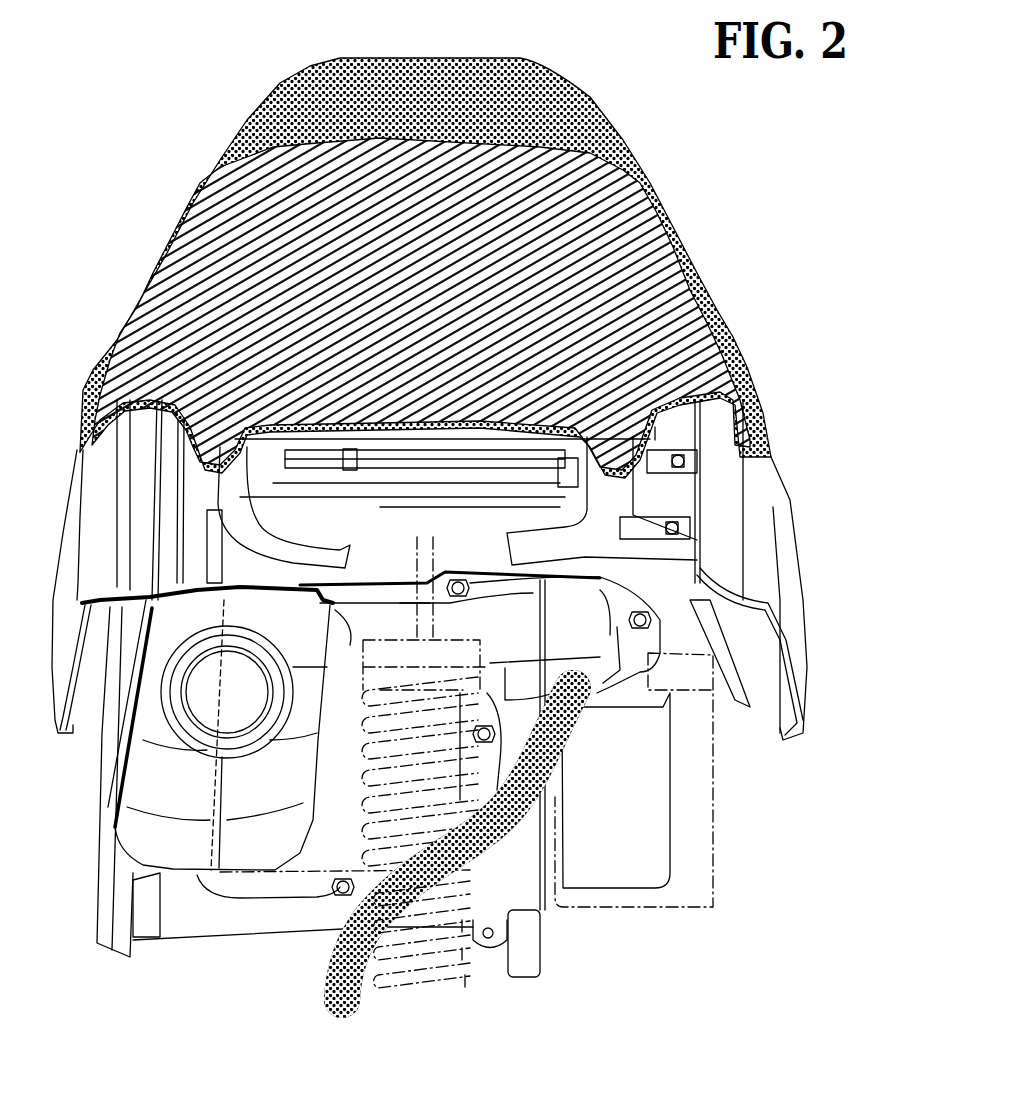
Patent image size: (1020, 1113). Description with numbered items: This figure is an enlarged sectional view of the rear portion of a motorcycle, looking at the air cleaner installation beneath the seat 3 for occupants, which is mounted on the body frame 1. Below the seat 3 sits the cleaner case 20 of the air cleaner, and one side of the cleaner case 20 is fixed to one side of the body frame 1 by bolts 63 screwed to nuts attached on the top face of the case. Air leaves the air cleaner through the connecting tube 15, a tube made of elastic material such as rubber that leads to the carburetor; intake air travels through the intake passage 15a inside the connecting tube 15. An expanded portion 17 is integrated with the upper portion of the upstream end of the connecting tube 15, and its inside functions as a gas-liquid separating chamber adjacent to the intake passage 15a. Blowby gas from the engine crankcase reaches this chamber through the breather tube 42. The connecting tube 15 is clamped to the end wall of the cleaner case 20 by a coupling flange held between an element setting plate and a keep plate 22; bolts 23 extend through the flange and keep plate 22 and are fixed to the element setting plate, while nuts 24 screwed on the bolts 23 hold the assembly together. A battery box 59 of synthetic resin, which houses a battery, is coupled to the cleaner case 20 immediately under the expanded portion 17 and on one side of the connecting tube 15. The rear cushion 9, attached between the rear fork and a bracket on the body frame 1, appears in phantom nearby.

The seat 3 is at (683, 250).
The cleaner case 20 is at (470, 520).
The bolts 63 is at (718, 430).
The body frame 1 is at (641, 498).
The expanded portion 17 is at (610, 575).
The nuts 24 is at (600, 592).
The bolts 23 is at (459, 597).
The keep plate 22 is at (392, 598).
The connecting tube 15 is at (147, 722).
The intake passage 15a is at (190, 700).
The battery box 59 is at (717, 842).
The breather tube 42 is at (327, 988).
The rear cushion 9 is at (430, 985).